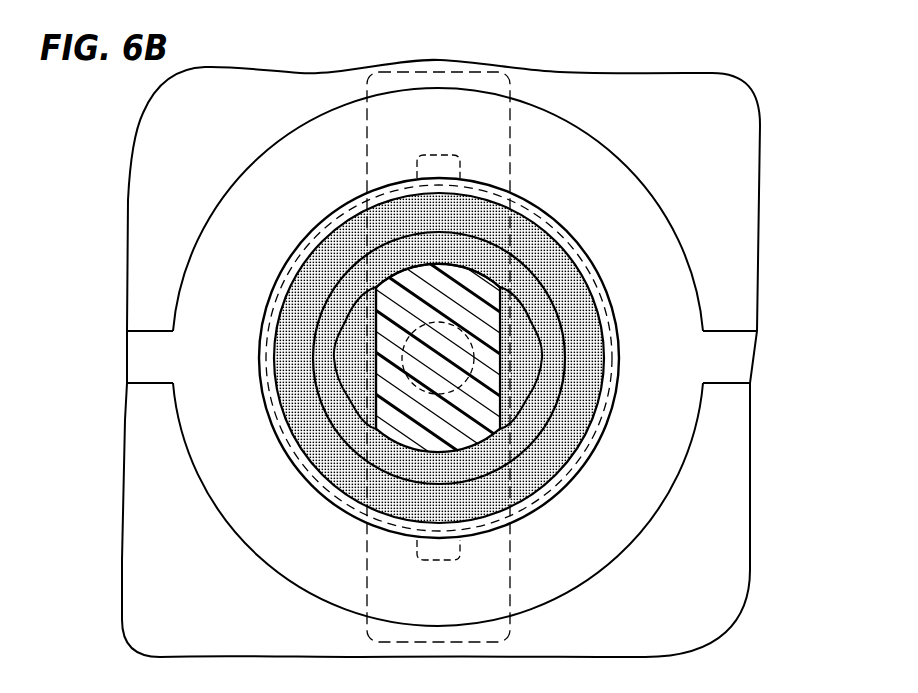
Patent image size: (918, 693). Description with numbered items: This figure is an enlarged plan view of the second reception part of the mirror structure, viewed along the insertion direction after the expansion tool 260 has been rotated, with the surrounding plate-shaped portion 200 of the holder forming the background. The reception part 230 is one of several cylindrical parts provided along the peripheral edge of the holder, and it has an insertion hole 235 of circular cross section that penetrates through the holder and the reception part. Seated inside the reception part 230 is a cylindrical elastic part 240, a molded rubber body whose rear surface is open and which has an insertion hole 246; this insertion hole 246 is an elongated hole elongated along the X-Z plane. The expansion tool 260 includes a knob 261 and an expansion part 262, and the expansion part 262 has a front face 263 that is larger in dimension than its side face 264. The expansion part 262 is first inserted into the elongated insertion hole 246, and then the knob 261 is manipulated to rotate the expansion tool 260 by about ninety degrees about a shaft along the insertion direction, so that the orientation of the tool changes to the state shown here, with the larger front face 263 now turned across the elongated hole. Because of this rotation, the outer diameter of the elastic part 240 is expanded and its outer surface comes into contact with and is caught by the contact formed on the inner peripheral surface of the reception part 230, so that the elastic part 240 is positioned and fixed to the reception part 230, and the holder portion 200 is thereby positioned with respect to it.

The substrate 200 is at (710, 563).
The reception part 230 is at (614, 352).
The insertion hole 235 is at (557, 245).
The elastic part 240 is at (516, 467).
The insertion hole 246 is at (525, 393).
The expansion tool 260 is at (510, 627).
The knob 261 is at (367, 148).
The expansion part 262 is at (397, 420).
The front face 263 is at (376, 352).
The side face 264 is at (460, 272).